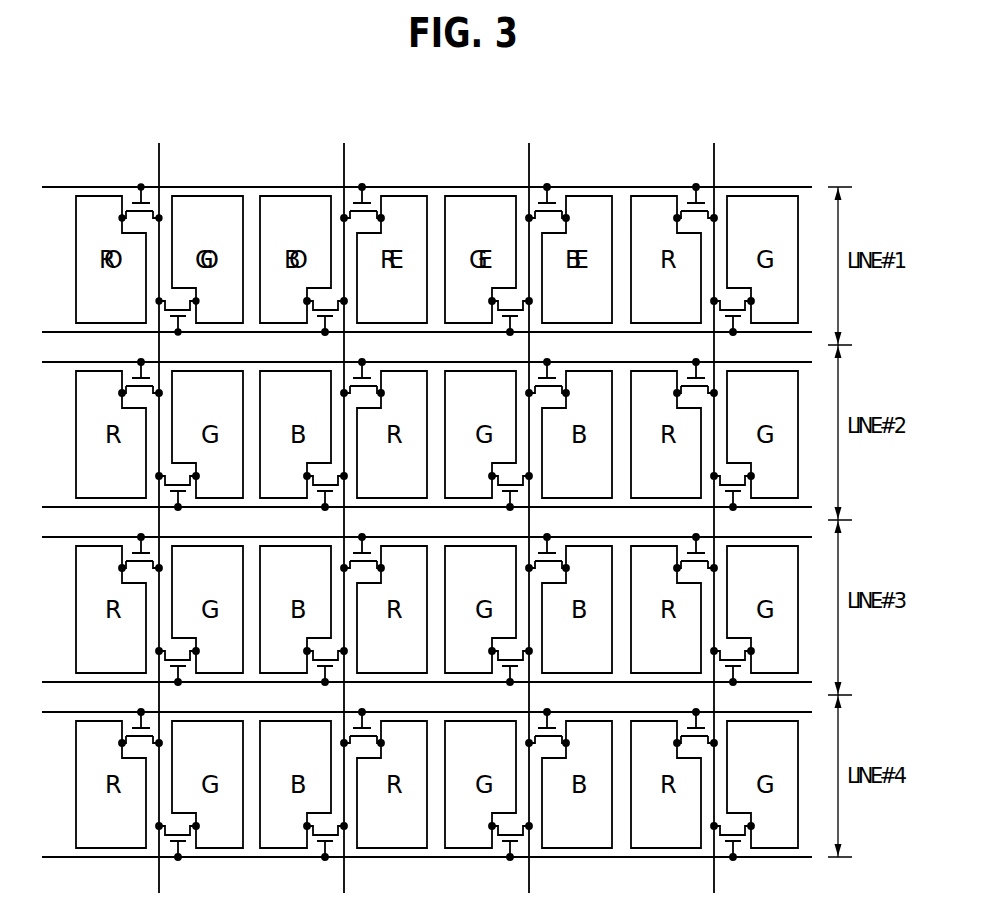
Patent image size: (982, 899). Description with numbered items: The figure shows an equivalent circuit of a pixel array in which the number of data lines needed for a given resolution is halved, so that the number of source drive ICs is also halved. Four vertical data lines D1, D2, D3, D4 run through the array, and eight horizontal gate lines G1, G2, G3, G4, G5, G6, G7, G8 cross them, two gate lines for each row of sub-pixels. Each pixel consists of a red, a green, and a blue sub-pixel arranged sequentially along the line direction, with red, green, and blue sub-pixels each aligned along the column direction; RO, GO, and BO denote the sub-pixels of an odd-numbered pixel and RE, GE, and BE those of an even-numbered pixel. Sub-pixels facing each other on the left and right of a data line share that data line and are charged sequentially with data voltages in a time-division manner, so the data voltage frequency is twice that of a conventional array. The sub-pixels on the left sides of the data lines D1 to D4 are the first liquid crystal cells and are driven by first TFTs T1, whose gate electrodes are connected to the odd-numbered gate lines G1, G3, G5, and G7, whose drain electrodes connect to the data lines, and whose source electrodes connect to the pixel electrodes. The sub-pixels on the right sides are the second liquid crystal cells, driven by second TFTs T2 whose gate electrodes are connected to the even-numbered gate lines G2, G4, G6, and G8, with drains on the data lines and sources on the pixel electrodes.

The first TFT T1 is at (129, 199).
The second TFT T2 is at (188, 321).
The data line D1 is at (159, 506).
The data line D2 is at (344, 506).
The data line D3 is at (529, 506).
The data line D4 is at (714, 506).
The gate line G1 is at (415, 186).
The gate line G2 is at (415, 331).
The gate line G3 is at (415, 361).
The gate line G4 is at (415, 506).
The gate line G5 is at (415, 536).
The gate line G6 is at (415, 681).
The gate line G7 is at (415, 711).
The gate line G8 is at (415, 856).